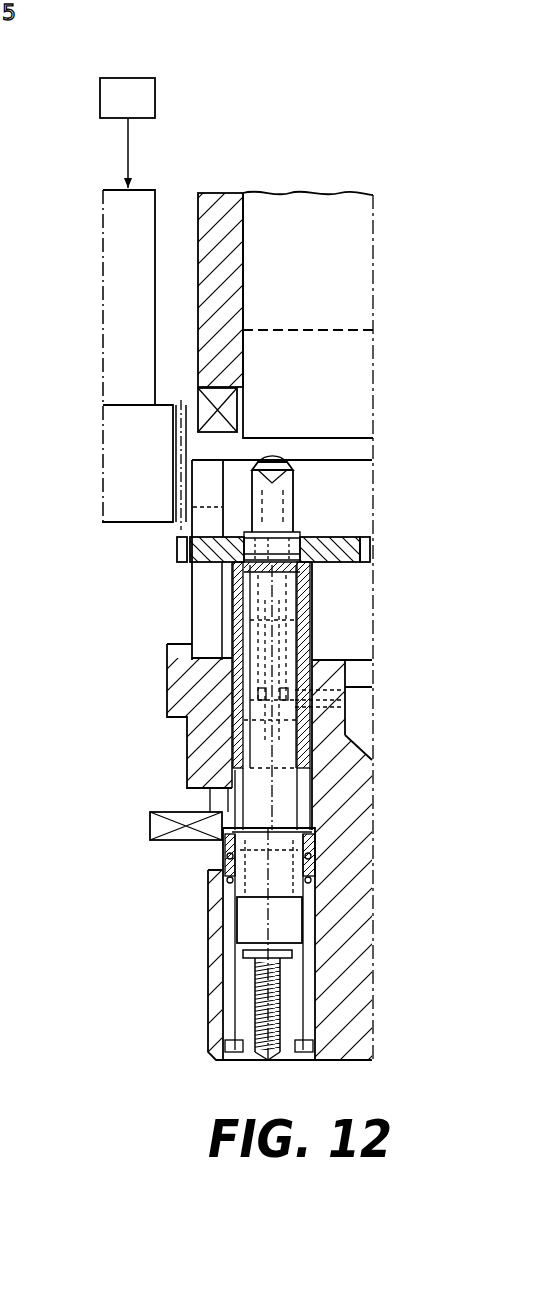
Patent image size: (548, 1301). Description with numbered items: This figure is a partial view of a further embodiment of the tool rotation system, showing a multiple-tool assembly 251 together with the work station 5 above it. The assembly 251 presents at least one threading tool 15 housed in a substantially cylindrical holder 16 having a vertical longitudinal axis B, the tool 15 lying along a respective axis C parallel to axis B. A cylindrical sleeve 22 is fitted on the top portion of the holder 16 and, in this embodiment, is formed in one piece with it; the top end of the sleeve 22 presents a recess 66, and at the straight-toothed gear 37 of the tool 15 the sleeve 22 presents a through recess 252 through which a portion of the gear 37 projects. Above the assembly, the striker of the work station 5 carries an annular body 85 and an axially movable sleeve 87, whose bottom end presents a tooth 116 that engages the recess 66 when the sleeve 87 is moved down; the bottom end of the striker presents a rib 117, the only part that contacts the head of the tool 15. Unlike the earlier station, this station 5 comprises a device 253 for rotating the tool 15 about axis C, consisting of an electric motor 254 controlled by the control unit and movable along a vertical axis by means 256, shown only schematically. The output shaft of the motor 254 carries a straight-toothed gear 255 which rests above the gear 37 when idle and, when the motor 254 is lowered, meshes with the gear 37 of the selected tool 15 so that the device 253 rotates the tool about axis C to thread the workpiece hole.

The work station 5 is at (358, 162).
The threading tool 15 is at (233, 528).
The holder 16 is at (345, 950).
The cylindrical sleeve 22 is at (204, 575).
The straight-toothed gear 37 is at (373, 552).
The recess 66 is at (203, 499).
The annular body 85 is at (388, 244).
The axially movable sleeve 87 is at (226, 247).
The tooth 116 is at (236, 414).
The rib 117 is at (337, 356).
The multiple-tool assembly 251 is at (156, 702).
The through recess 252 is at (205, 652).
The device for rotating work tool 253 is at (98, 163).
The electric motor 254 is at (136, 217).
The straight-toothed gear 255 is at (117, 480).
The means for moving motor 256 is at (128, 86).
The vertical longitudinal axis B is at (372, 998).
The tool axis C is at (240, 913).